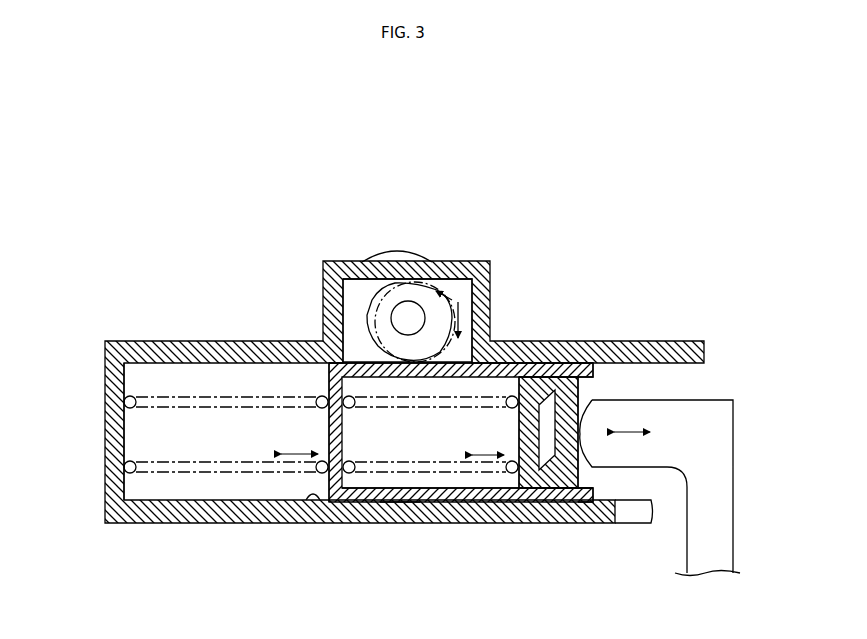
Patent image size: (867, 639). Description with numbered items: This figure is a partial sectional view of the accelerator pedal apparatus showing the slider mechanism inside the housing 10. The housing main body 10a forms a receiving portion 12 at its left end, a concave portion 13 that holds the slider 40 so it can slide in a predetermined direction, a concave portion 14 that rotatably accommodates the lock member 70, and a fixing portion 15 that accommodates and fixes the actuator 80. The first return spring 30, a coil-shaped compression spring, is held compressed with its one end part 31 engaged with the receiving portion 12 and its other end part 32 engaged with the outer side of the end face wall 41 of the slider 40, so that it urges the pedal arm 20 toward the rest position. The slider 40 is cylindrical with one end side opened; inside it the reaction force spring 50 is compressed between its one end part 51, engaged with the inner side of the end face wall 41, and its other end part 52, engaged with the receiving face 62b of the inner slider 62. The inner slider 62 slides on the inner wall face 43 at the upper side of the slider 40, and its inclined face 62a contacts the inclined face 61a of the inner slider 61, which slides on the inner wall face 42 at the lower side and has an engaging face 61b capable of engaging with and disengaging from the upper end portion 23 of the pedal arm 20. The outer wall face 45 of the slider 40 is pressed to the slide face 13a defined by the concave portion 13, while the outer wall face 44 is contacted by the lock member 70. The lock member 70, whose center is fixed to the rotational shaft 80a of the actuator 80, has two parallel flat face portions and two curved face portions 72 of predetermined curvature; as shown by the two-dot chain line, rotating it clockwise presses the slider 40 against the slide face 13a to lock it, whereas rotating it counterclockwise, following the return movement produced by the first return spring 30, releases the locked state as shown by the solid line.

The housing 10 is at (404, 364).
The housing main body 10a is at (150, 337).
The receiving portion 12 is at (118, 437).
The concave portion 13 is at (289, 445).
The slide face 13a is at (313, 501).
The concave portion 14 is at (447, 299).
The fixing portion 15 is at (425, 258).
The pedal arm 20 is at (677, 468).
The upper end portion 23 is at (700, 400).
The first return spring 30 is at (222, 497).
The one end part 31 is at (130, 474).
The other end part 32 is at (320, 474).
The slider 40 is at (439, 430).
The end face wall 41 is at (330, 357).
The inner wall face 42 is at (483, 490).
The inner wall face 43 is at (510, 378).
The outer wall face 44 is at (398, 362).
The outer wall face 45 is at (400, 503).
The reaction force spring 50 is at (434, 498).
The one end part 51 is at (349, 497).
The other end part 52 is at (512, 474).
The inner slider 61 is at (573, 440).
The inclined face 61a is at (585, 372).
The engaging face 61b is at (579, 400).
The inner slider 62 is at (541, 427).
The inclined face 62a is at (565, 380).
The receiving face 62b is at (519, 440).
The lock member 70 is at (357, 306).
The curved face portion 72 is at (422, 322).
The actuator 80 is at (409, 271).
The rotational shaft 80a is at (408, 318).